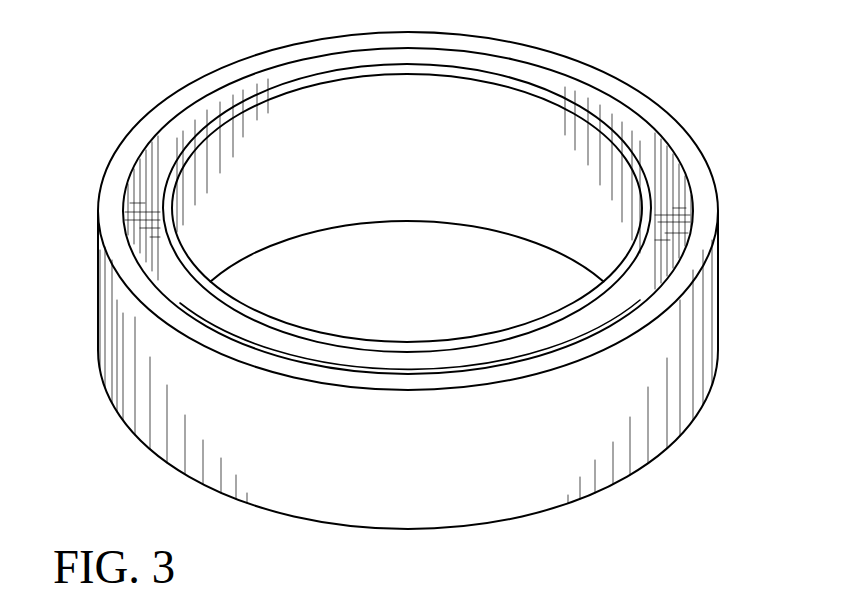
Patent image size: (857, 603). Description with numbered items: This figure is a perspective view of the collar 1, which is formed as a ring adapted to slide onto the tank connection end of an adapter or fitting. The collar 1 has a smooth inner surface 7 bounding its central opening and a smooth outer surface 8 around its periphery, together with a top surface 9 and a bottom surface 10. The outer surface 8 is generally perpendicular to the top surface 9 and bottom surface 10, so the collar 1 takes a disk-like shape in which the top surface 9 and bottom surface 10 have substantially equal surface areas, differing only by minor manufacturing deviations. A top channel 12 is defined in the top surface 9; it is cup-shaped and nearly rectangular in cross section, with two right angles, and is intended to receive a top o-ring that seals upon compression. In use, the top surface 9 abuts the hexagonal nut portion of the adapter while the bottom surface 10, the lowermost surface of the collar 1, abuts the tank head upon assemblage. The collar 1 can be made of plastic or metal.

The collar 1 is at (535, 48).
The inner surface 7 is at (597, 192).
The outer surface 8 is at (122, 313).
The top surface 9 is at (603, 493).
The bottom surface 10 is at (670, 294).
The top channel 12 is at (667, 249).